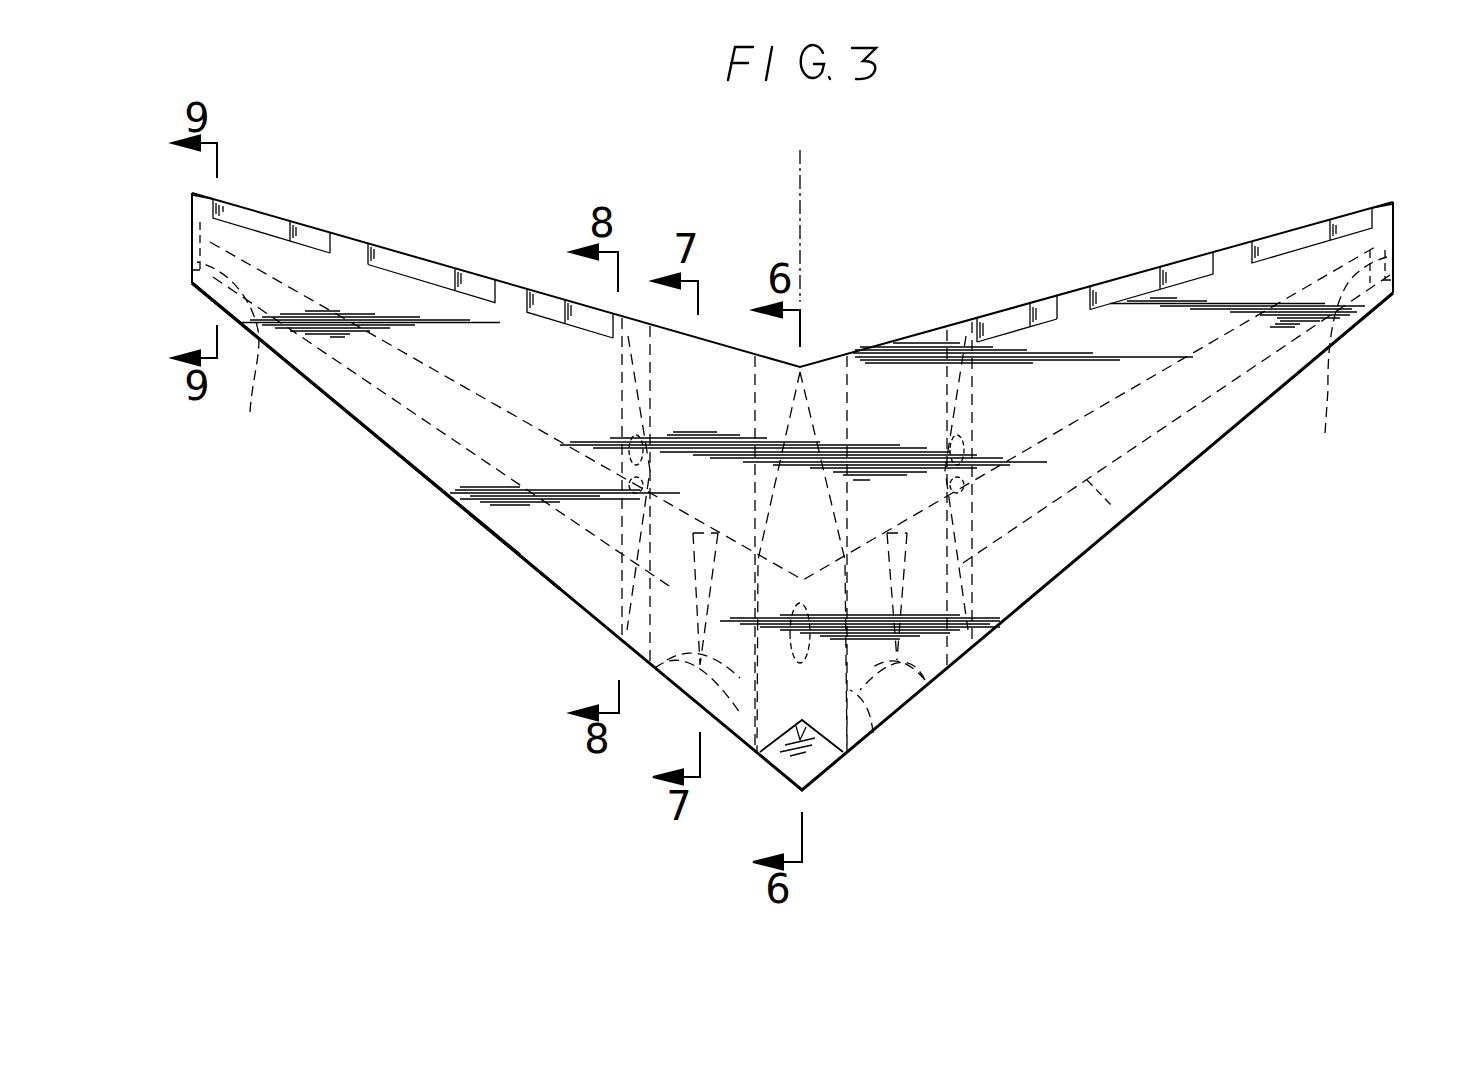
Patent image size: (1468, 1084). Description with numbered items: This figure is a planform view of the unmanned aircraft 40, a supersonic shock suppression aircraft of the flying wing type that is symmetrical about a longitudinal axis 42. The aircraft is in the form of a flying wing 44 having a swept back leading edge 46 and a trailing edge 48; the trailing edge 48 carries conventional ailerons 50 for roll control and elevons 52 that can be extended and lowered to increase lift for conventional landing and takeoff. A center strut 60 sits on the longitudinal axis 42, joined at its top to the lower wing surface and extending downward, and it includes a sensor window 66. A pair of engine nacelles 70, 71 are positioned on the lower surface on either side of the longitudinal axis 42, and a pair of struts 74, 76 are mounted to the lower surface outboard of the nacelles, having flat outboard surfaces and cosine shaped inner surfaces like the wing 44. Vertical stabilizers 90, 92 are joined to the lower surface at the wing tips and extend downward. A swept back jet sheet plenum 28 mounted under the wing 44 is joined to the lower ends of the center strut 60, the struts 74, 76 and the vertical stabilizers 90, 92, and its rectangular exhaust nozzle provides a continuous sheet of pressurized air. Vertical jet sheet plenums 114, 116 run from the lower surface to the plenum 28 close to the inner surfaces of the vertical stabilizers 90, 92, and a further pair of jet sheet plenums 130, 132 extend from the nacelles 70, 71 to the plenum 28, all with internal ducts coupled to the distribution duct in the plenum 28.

The swept back jet sheet plenum 28 is at (1127, 517).
The unmanned aircraft 40 is at (445, 700).
The longitudinal axis 42 is at (803, 176).
The flying wing 44 is at (420, 478).
The swept back leading edge 46 is at (490, 540).
The trailing edge 48 is at (352, 243).
The ailerons 50 is at (262, 222).
The elevons 52 is at (430, 268).
The center strut 60 is at (873, 733).
The sensor window 66 is at (817, 768).
The engine nacelle 70 is at (655, 668).
The engine nacelle 71 is at (925, 680).
The strut 74 is at (608, 558).
The strut 76 is at (980, 560).
The vertical stabilizer 90 is at (192, 237).
The vertical stabilizer 92 is at (1400, 266).
The vertical jet sheet plenum 114 is at (239, 355).
The vertical jet sheet plenum 116 is at (1352, 359).
The jet sheet plenum 130 is at (630, 632).
The jet sheet plenum 132 is at (990, 630).